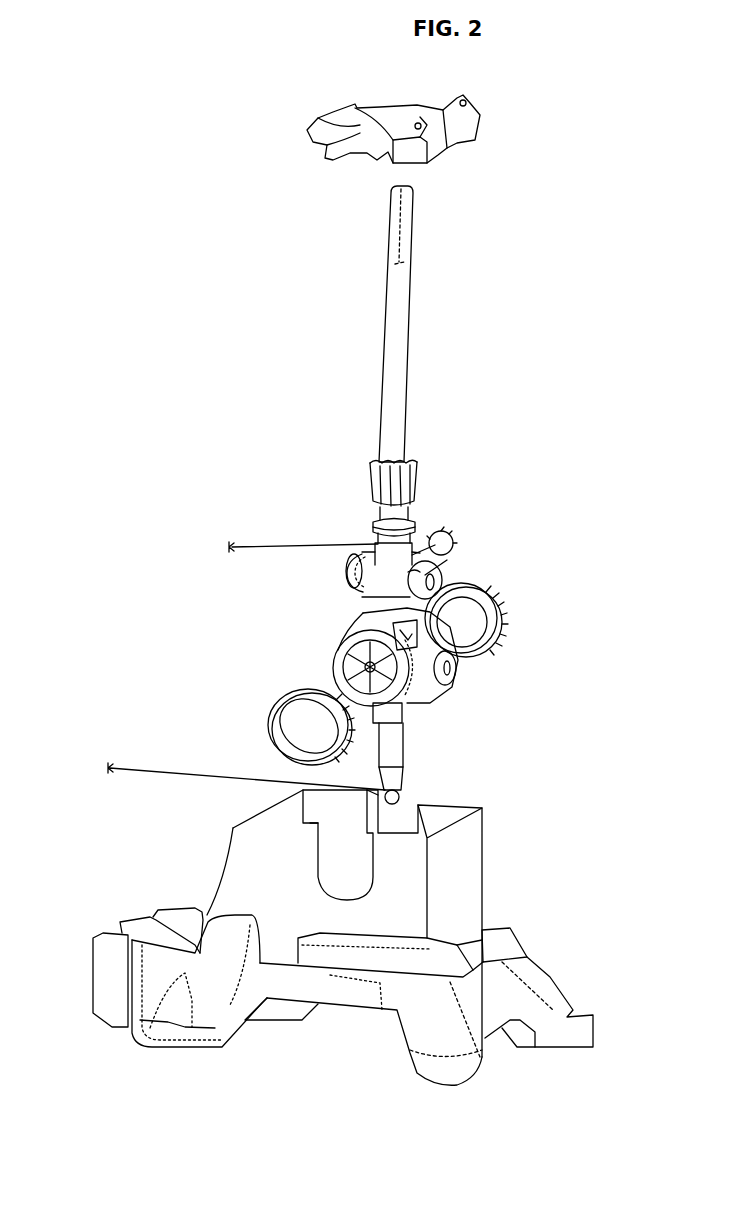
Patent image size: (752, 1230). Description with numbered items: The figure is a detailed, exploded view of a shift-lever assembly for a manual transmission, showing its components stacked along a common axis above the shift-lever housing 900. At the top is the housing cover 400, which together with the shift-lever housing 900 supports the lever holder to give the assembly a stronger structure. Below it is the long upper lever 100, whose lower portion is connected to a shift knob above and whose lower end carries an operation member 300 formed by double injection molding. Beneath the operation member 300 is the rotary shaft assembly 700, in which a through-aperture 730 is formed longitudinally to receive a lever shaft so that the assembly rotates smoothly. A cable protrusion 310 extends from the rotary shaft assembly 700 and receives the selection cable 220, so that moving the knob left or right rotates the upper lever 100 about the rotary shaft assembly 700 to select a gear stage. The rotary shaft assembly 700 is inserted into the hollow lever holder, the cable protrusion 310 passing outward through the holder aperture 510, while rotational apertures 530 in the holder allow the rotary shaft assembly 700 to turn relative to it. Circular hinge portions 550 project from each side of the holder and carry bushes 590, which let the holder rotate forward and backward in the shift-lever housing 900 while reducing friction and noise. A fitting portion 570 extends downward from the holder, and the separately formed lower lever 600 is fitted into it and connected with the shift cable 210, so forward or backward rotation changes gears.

The upper lever 100 is at (408, 354).
The shift cable 210 is at (178, 773).
The selection cable 220 is at (260, 545).
The operation member 300 is at (428, 468).
The cable protrusion 310 is at (455, 545).
The housing cover 400 is at (484, 118).
The holder aperture 510 is at (360, 630).
The rotational aperture 530 is at (455, 673).
The circular hinge portion 550 is at (330, 700).
The fitting portion 570 is at (405, 708).
The bush 590 is at (500, 612).
The lower lever 600 is at (400, 777).
The rotary shaft assembly 700 is at (335, 571).
The through-aperture 730 is at (442, 575).
The shift-lever housing 900 is at (513, 844).